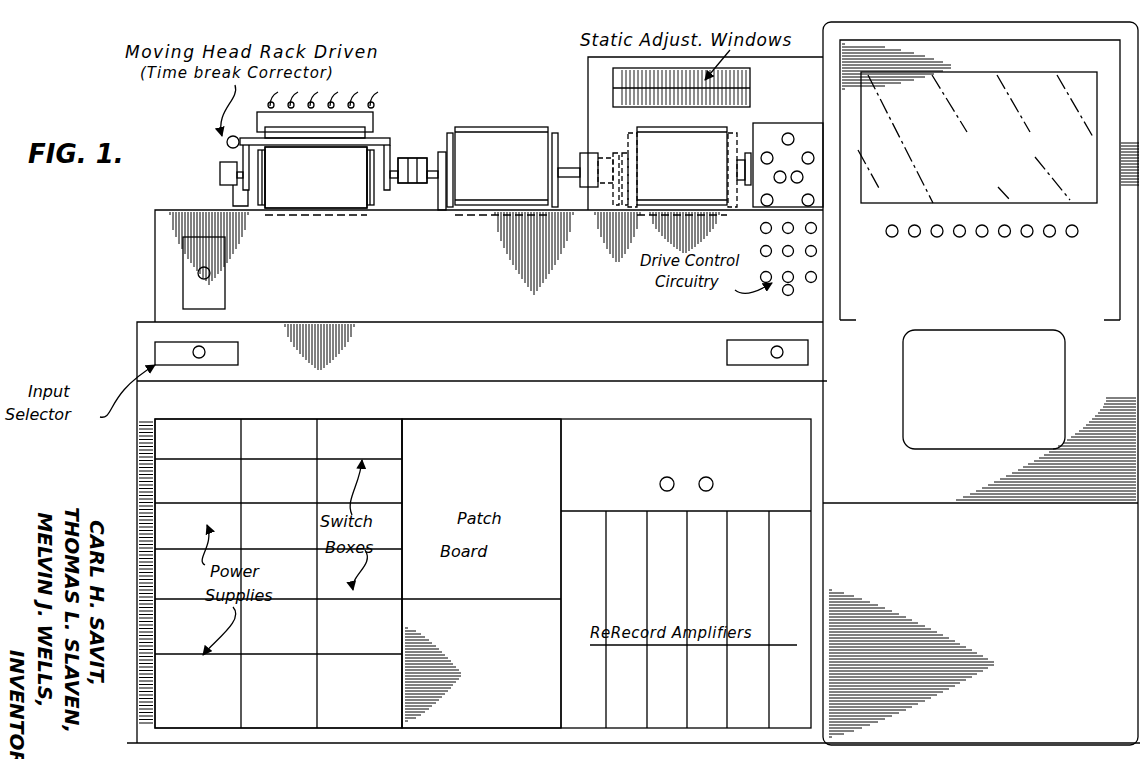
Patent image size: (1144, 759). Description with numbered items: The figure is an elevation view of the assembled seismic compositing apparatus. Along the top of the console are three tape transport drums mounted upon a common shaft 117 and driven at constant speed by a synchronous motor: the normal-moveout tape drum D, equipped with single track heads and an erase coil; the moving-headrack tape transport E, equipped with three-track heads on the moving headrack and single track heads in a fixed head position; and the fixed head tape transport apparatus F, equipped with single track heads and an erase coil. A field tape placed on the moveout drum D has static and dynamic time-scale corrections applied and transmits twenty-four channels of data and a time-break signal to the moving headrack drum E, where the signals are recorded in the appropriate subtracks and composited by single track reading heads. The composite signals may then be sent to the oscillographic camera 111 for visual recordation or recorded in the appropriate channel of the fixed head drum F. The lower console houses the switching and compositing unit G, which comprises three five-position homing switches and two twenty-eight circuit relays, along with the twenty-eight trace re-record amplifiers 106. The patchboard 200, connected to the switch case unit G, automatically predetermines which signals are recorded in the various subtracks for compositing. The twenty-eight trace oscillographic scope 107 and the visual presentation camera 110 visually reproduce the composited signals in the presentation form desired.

The oscillographic scope 107 is at (990, 193).
The visual presentation camera 110 is at (348, 200).
The oscillographic camera 111 is at (998, 398).
The common shaft 117 is at (432, 165).
The patchboard 200 is at (498, 475).
The re-record amplifiers 106 is at (686, 602).
The moving-headrack tape transport E is at (380, 125).
The fixed head tape transport apparatus F is at (476, 127).
The normal-moveout tape drum D is at (608, 120).
The switching and compositing unit G is at (292, 496).